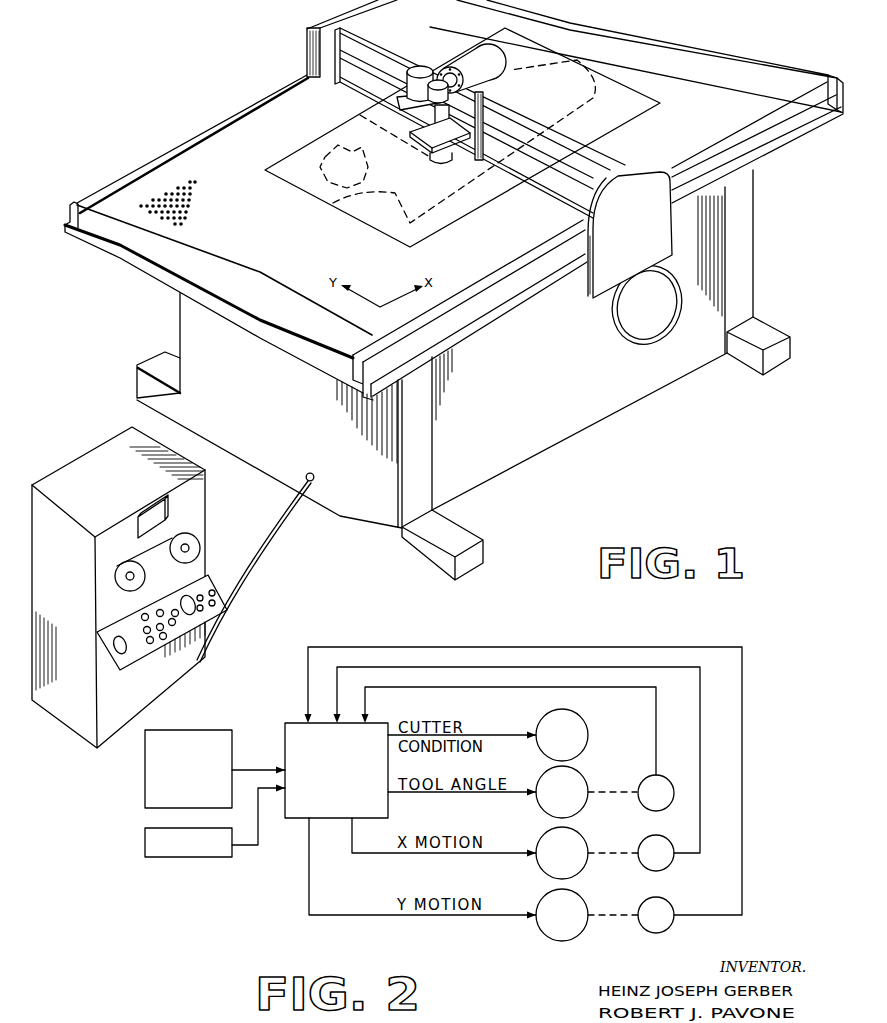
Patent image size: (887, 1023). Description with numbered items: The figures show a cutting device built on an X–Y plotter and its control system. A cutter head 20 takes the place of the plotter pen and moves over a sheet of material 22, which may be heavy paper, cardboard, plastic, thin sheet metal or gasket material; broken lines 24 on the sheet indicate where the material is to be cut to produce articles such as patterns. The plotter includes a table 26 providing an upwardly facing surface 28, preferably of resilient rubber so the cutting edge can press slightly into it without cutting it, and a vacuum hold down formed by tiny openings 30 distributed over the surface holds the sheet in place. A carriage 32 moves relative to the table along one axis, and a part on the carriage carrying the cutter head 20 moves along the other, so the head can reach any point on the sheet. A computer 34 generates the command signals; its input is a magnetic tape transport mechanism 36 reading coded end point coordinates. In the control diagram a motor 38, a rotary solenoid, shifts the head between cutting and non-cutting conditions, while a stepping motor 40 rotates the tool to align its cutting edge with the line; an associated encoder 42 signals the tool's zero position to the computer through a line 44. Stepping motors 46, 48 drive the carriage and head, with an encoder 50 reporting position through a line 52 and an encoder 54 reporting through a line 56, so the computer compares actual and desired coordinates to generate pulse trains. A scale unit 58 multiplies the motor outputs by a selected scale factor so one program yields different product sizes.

In FIG. 1, the cutter head 20 is at (481, 52).
In FIG. 1, the sheet of material 22 is at (630, 98).
In FIG. 1, the broken lines 24 is at (333, 203).
In FIG. 1, the table 26 is at (687, 31).
In FIG. 1, the upwardly facing surface 28 is at (590, 34).
In FIG. 1, the openings 30 is at (170, 200).
In FIG. 1, the carriage 32 is at (597, 163).
In FIG. 1, the computer 34 is at (197, 567).
In FIG. 2, the computer 34 is at (296, 721).
In FIG. 1, the magnetic tape transport mechanism 36 is at (190, 521).
In FIG. 2, the magnetic tape transport mechanism 36 is at (219, 727).
In FIG. 2, the motor 38 is at (578, 720).
In FIG. 2, the motor 40 is at (580, 777).
In FIG. 2, the encoder 42 is at (659, 776).
In FIG. 2, the line 44 is at (657, 718).
In FIG. 2, the motor 46 is at (581, 897).
In FIG. 2, the motor 48 is at (582, 837).
In FIG. 2, the encoder 50 is at (657, 897).
In FIG. 2, the line 52 is at (742, 718).
In FIG. 2, the encoder 54 is at (657, 836).
In FIG. 2, the line 56 is at (700, 718).
In FIG. 2, the scale unit 58 is at (233, 858).